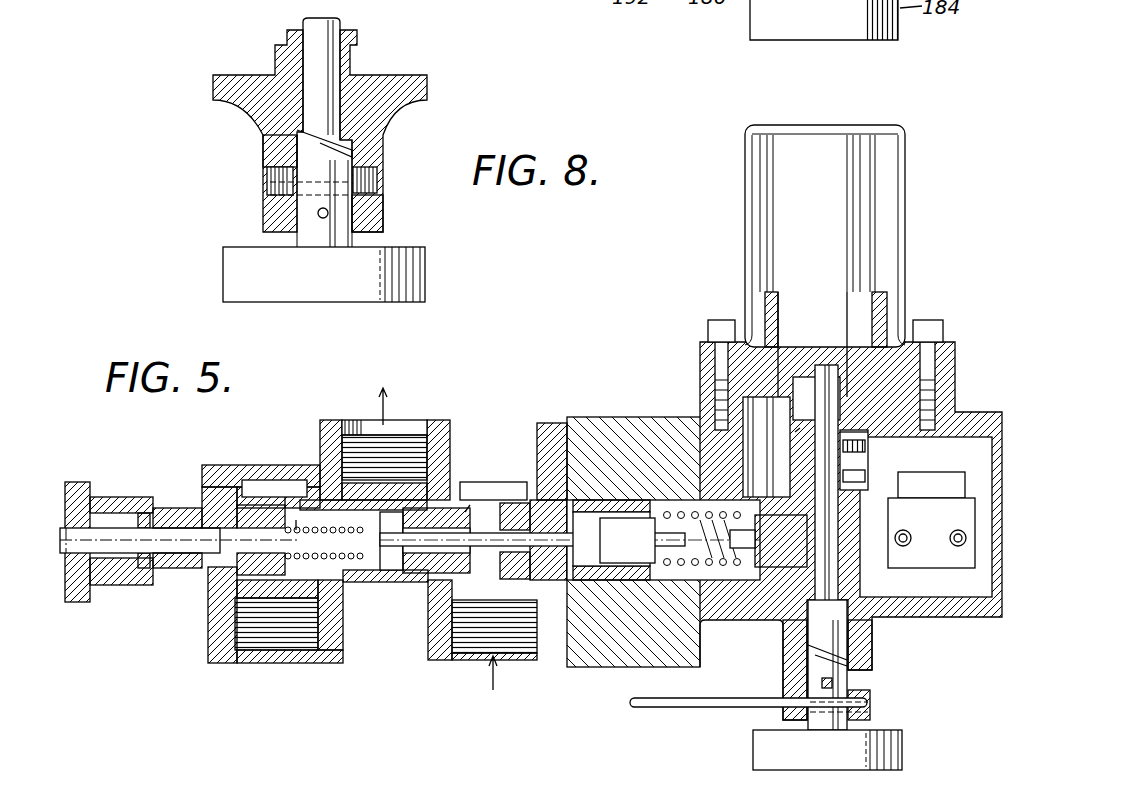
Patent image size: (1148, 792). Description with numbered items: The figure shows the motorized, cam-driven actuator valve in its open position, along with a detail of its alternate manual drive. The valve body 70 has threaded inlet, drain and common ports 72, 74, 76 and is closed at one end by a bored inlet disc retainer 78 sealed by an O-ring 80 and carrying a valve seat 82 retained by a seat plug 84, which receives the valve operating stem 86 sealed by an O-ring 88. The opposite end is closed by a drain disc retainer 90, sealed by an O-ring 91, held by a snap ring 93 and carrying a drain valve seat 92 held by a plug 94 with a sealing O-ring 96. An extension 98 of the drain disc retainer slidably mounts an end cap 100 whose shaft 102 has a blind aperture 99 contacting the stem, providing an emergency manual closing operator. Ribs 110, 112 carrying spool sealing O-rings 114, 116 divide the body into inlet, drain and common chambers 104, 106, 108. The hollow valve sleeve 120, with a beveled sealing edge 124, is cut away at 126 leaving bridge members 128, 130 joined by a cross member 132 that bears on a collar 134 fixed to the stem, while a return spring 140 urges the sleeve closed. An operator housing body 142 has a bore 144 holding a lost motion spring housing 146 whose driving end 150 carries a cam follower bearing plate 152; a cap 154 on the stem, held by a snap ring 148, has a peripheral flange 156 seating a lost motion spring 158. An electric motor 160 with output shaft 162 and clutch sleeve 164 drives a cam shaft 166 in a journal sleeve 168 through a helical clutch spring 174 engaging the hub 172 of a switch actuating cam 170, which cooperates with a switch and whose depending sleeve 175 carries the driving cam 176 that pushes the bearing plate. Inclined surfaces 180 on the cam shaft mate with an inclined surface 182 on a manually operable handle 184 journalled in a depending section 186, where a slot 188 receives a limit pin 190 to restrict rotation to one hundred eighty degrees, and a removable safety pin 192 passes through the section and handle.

In FIG. 5, the valve body 70 is at (215, 468).
In FIG. 5, the inlet port 72 is at (470, 655).
In FIG. 5, the drain port 74 is at (212, 640).
In FIG. 5, the common port 76 is at (385, 445).
In FIG. 5, the inlet disc retainer 78 is at (585, 533).
In FIG. 5, the O-ring 80 is at (548, 470).
In FIG. 5, the valve seat 82 is at (524, 513).
In FIG. 5, the seat plug 84 is at (524, 565).
In FIG. 5, the valve operating stem 86 is at (590, 507).
In FIG. 5, the O-ring 88 is at (552, 540).
In FIG. 5, the drain disc retainer 90 is at (205, 500).
In FIG. 5, the O-ring 91 is at (222, 600).
In FIG. 5, the drain valve seat 92 is at (252, 512).
In FIG. 5, the snap ring 93 is at (230, 590).
In FIG. 5, the plug 94 is at (252, 570).
In FIG. 5, the sealing O-ring 96 is at (195, 565).
In FIG. 5, the extension 98 is at (142, 513).
In FIG. 5, the blind aperture 99 is at (180, 541).
In FIG. 5, the end cap 100 is at (88, 484).
In FIG. 5, the shaft 102 is at (120, 512).
In FIG. 5, the inlet chamber 104 is at (490, 490).
In FIG. 5, the drain chamber 106 is at (262, 483).
In FIG. 5, the common chamber 108 is at (355, 600).
In FIG. 5, the rib 110 is at (430, 605).
In FIG. 5, the rib 112 is at (350, 640).
In FIG. 5, the spool sealing O-ring 114 is at (470, 505).
In FIG. 5, the spool sealing O-ring 116 is at (330, 470).
In FIG. 5, the valve sleeve 120 is at (285, 497).
In FIG. 5, the sealing edge 124 is at (290, 650).
In FIG. 5, the cut away portion 126 is at (395, 578).
In FIG. 5, the bridge member 128 is at (423, 492).
In FIG. 5, the bridge member 130 is at (390, 570).
In FIG. 5, the cross member 132 is at (300, 557).
In FIG. 5, the collar 134 is at (455, 548).
In FIG. 5, the return spring 140 is at (298, 528).
In FIG. 8, the operator housing body 142 is at (427, 90).
In FIG. 5, the operator housing body 142 is at (660, 420).
In FIG. 5, the bore 144 is at (590, 580).
In FIG. 5, the lost motion spring housing 146 is at (650, 578).
In FIG. 5, the snap ring 148 is at (660, 510).
In FIG. 5, the driving end 150 is at (735, 585).
In FIG. 5, the cam follower bearing plate 152 is at (768, 541).
In FIG. 5, the cap 154 is at (650, 560).
In FIG. 5, the peripheral flange 156 is at (690, 508).
In FIG. 5, the lost motion spring 158 is at (705, 520).
In FIG. 5, the electric motor 160 is at (862, 245).
In FIG. 5, the output shaft 162 is at (845, 432).
In FIG. 5, the clutch sleeve 164 is at (800, 428).
In FIG. 8, the cam shaft 166 is at (330, 62).
In FIG. 5, the cam shaft 166 is at (822, 620).
In FIG. 5, the journal sleeve 168 is at (850, 600).
In FIG. 5, the switch actuating cam 170 is at (905, 470).
In FIG. 5, the hub 172 is at (865, 472).
In FIG. 5, the helical clutch spring 174 is at (865, 452).
In FIG. 5, the depending sleeve 175 is at (912, 540).
In FIG. 5, the driving cam 176 is at (880, 540).
In FIG. 8, the inclined surfaces 180 is at (300, 142).
In FIG. 5, the inclined surfaces 180 is at (810, 650).
In FIG. 8, the inclined surface 182 is at (340, 150).
In FIG. 5, the inclined surface 182 is at (815, 655).
In FIG. 8, the manually operable handle 184 is at (425, 262).
In FIG. 5, the manually operable handle 184 is at (753, 748).
In FIG. 8, the depending section 186 is at (383, 210).
In FIG. 5, the depending section 186 is at (865, 650).
In FIG. 8, the slot 188 is at (377, 172).
In FIG. 5, the slot 188 is at (862, 700).
In FIG. 8, the limit pin 190 is at (272, 185).
In FIG. 5, the limit pin 190 is at (822, 683).
In FIG. 8, the safety pin 192 is at (318, 213).
In FIG. 5, the safety pin 192 is at (680, 705).